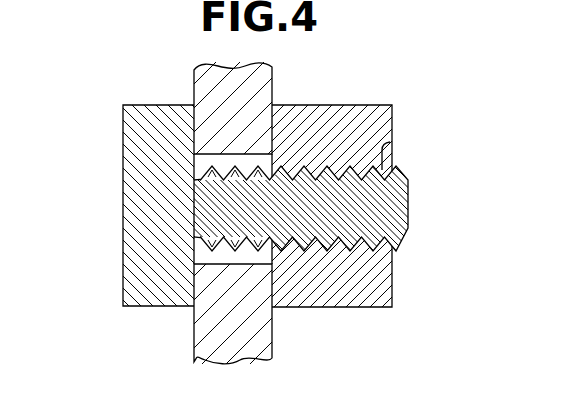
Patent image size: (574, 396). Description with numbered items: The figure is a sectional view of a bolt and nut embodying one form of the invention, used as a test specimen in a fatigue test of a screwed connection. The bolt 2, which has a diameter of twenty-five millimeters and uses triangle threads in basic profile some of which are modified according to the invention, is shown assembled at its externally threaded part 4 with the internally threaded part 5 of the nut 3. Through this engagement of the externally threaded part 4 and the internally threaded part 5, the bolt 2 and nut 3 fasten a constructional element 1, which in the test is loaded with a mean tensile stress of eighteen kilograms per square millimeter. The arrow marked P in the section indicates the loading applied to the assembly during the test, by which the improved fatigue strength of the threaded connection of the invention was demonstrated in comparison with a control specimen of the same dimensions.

The constructional element 1 is at (205, 94).
The bolt 2 is at (153, 288).
The nut 3 is at (331, 285).
The externally threaded part 4 is at (408, 182).
The internally threaded part 5 is at (385, 150).
The force P is at (120, 209).